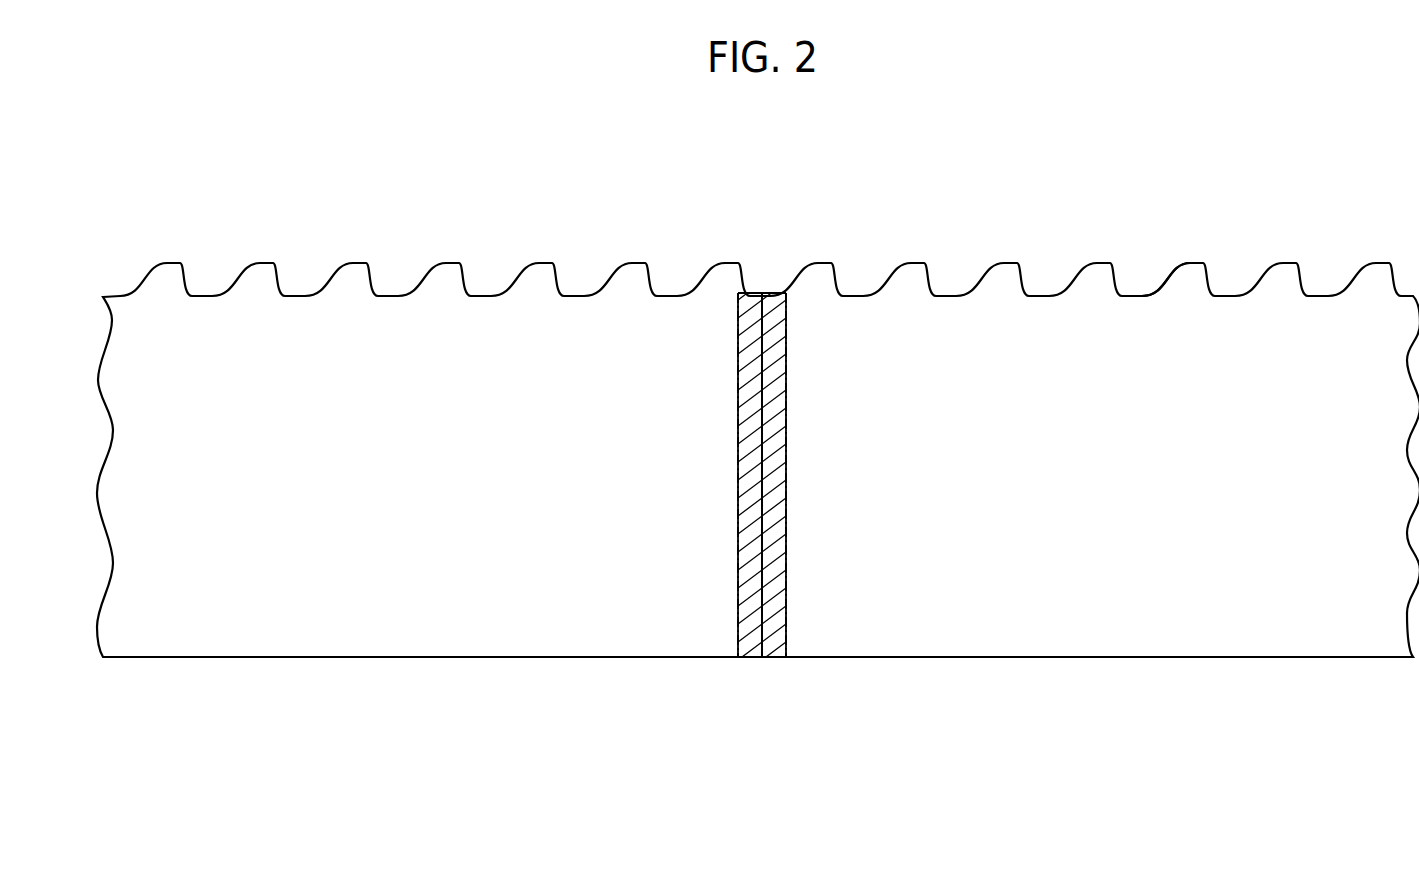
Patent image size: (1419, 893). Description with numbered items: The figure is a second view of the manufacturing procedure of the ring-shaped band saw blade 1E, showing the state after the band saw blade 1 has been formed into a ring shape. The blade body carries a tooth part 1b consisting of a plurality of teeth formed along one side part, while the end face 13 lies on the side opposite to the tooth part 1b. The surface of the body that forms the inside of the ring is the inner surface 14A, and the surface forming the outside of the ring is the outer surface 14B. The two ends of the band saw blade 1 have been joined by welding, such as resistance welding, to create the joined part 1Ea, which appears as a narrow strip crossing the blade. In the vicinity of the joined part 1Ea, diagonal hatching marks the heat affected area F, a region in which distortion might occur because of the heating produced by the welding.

The band saw blade 1 is at (1028, 627).
The tooth part 1b is at (1153, 237).
The ring-shaped band saw blade 1E is at (423, 658).
The joined part 1Ea is at (777, 622).
The end face 13 is at (613, 658).
The inner surface 14A is at (1173, 607).
The outer surface 14B is at (1248, 623).
The heat affected area F is at (787, 581).